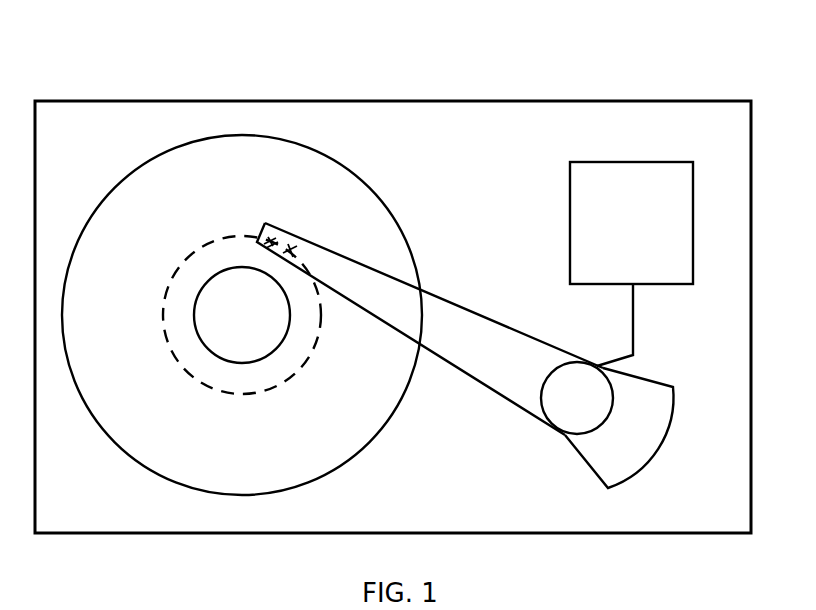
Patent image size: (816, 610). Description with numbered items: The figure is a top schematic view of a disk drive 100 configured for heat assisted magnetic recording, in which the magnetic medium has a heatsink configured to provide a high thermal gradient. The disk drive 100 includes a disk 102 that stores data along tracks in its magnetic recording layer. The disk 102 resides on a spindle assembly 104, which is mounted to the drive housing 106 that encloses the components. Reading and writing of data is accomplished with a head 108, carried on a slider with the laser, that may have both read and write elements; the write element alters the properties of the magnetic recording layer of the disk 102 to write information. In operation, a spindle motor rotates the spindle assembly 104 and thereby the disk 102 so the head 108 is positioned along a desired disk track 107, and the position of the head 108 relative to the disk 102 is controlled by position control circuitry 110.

The disk drive 100 is at (158, 64).
The disk 102 is at (368, 185).
The spindle assembly 104 is at (259, 319).
The drive housing 106 is at (475, 100).
The disk track 107 is at (205, 246).
The head 108 is at (282, 238).
The position control circuitry 110 is at (644, 236).